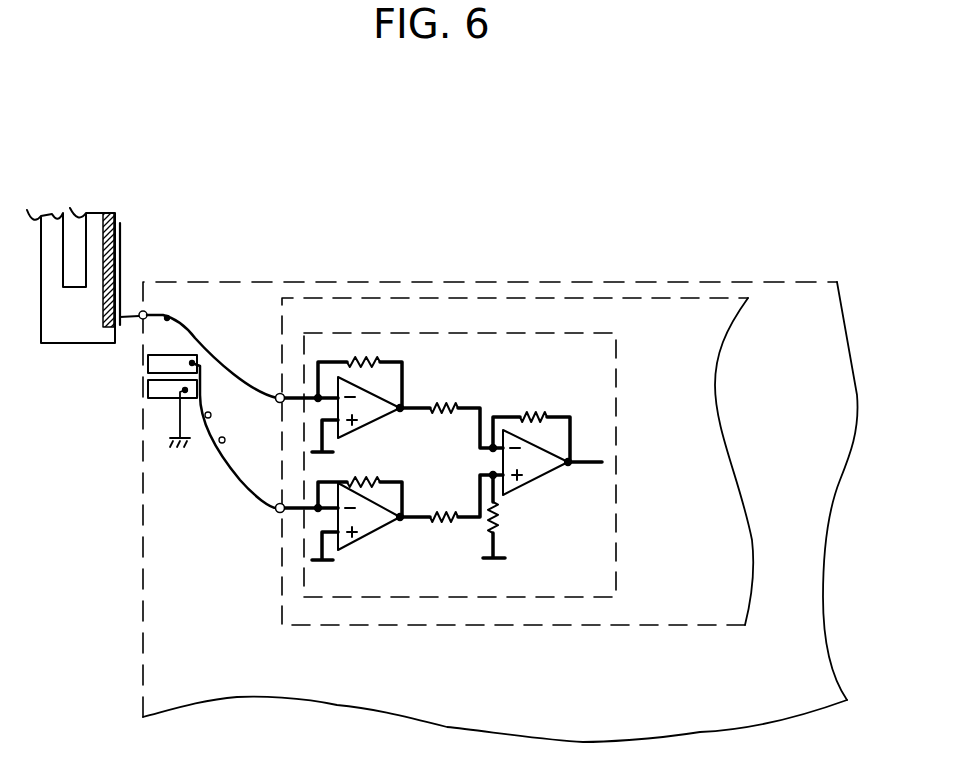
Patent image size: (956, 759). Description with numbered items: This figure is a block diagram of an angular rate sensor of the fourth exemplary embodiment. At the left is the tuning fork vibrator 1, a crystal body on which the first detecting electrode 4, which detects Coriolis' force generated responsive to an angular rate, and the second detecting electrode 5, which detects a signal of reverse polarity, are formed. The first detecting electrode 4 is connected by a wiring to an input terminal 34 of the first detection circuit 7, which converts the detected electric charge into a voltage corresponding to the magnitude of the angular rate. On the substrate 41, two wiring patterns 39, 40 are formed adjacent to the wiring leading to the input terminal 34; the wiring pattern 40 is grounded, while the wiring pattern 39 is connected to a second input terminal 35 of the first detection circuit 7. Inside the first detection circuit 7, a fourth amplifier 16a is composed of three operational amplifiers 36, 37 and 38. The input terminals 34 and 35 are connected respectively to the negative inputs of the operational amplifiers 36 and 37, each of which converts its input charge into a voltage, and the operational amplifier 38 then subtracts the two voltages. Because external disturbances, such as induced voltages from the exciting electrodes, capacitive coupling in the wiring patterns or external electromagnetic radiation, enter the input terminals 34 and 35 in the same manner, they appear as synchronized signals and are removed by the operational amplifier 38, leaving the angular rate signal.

The tuning fork vibrator 1 is at (67, 343).
The first detecting electrode 4 is at (121, 238).
The second detecting electrode 5 is at (110, 213).
The first detection circuit 7 is at (693, 298).
The fourth amplifier 16a is at (552, 333).
The input terminal 34 is at (278, 402).
The input terminal 35 is at (278, 512).
The operational amplifier 36 is at (372, 395).
The operational amplifier 37 is at (373, 532).
The operational amplifier 38 is at (523, 487).
The wiring pattern 39 is at (172, 353).
The wiring pattern 40 is at (160, 400).
The substrate 41 is at (415, 282).